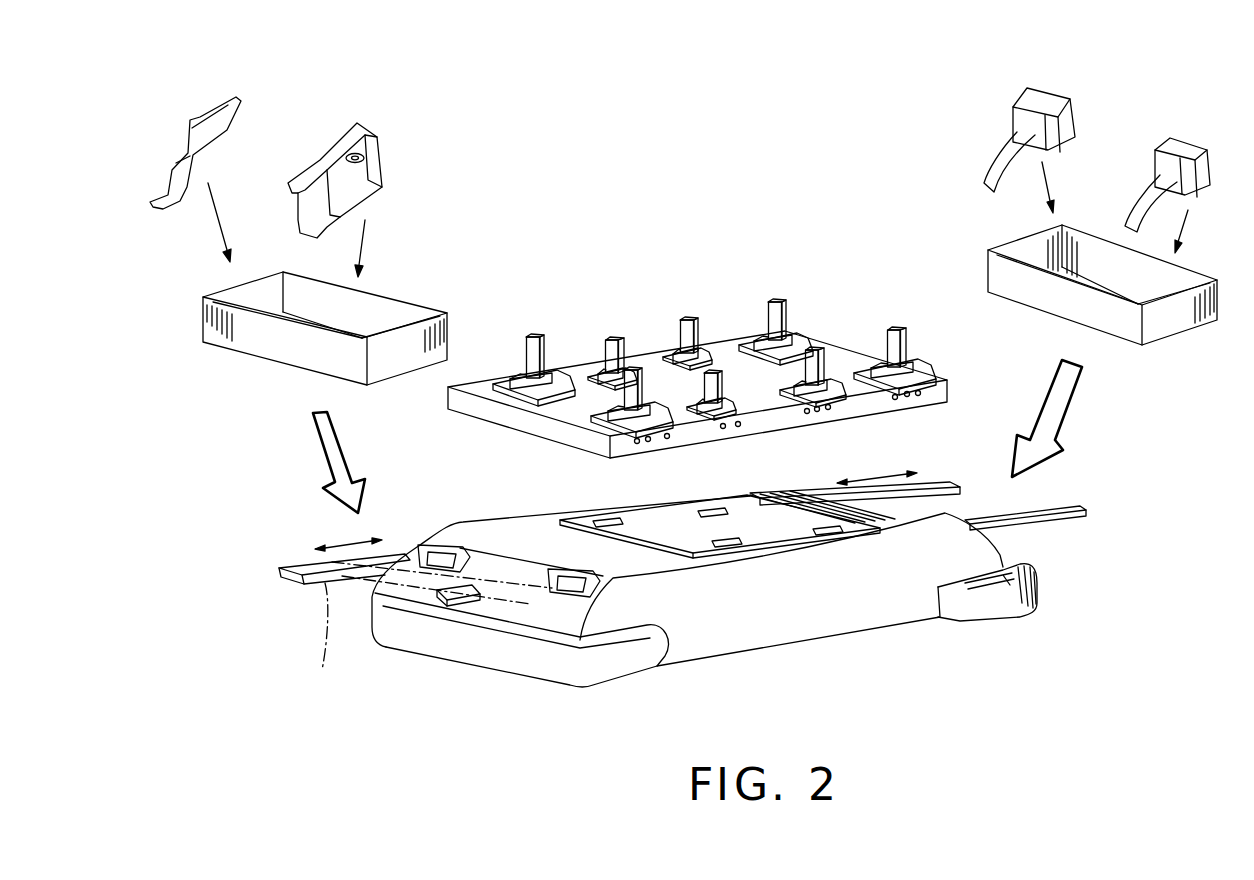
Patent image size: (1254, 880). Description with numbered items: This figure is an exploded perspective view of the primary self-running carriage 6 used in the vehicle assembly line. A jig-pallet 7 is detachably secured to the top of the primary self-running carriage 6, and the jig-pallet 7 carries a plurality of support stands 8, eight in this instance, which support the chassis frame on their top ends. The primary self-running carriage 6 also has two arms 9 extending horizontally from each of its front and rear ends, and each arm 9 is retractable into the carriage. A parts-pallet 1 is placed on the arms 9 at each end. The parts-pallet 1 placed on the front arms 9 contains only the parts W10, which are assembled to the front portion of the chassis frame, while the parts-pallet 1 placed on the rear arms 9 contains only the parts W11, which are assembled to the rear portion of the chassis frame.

The parts W10 is at (320, 147).
The parts W11 is at (1147, 177).
The parts-pallet 1 is at (277, 362).
The jig-pallet 7 is at (720, 337).
The support stands 8 is at (820, 347).
The primary self-running carriage 6 is at (870, 620).
The arms 9 is at (525, 600).